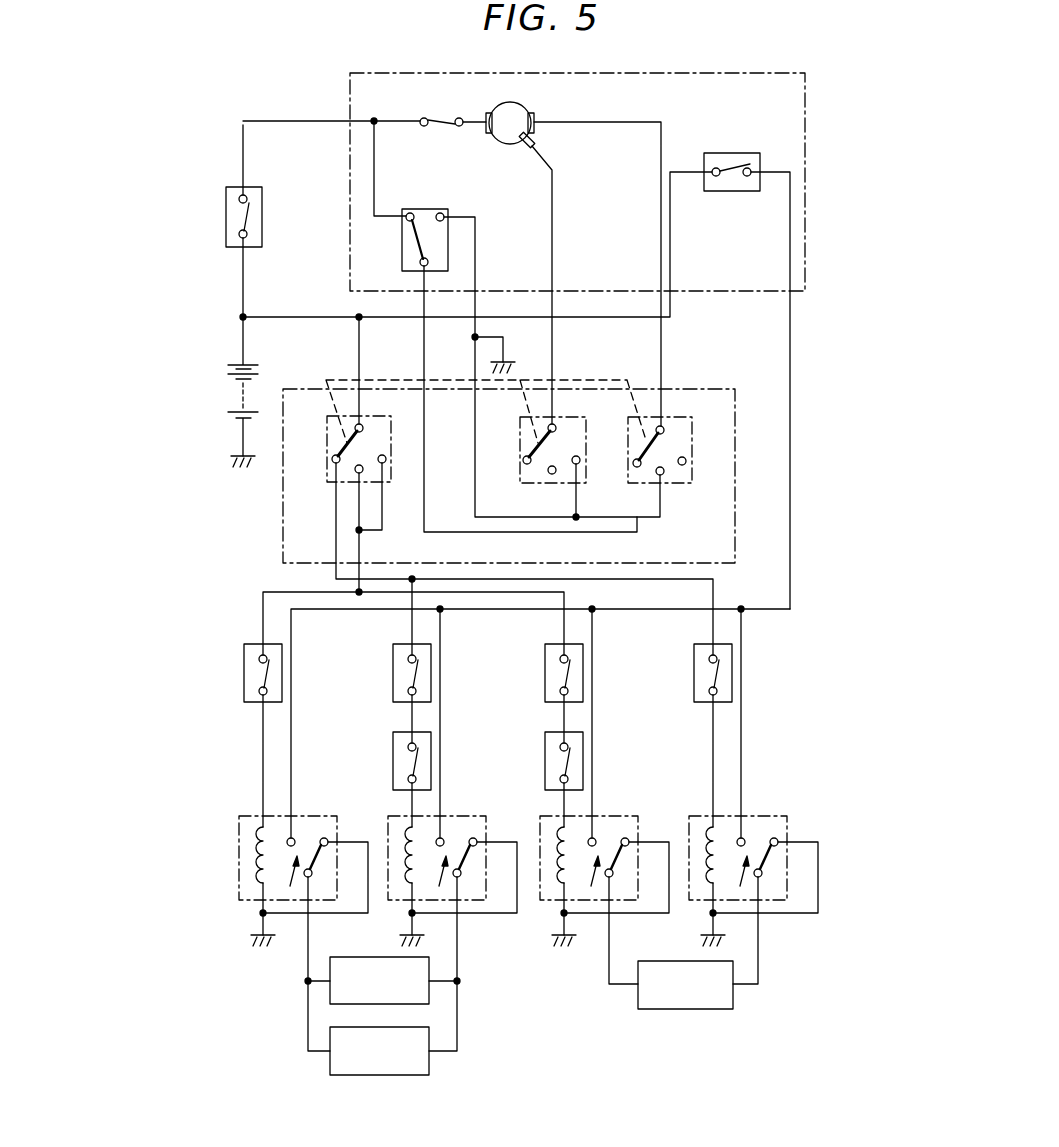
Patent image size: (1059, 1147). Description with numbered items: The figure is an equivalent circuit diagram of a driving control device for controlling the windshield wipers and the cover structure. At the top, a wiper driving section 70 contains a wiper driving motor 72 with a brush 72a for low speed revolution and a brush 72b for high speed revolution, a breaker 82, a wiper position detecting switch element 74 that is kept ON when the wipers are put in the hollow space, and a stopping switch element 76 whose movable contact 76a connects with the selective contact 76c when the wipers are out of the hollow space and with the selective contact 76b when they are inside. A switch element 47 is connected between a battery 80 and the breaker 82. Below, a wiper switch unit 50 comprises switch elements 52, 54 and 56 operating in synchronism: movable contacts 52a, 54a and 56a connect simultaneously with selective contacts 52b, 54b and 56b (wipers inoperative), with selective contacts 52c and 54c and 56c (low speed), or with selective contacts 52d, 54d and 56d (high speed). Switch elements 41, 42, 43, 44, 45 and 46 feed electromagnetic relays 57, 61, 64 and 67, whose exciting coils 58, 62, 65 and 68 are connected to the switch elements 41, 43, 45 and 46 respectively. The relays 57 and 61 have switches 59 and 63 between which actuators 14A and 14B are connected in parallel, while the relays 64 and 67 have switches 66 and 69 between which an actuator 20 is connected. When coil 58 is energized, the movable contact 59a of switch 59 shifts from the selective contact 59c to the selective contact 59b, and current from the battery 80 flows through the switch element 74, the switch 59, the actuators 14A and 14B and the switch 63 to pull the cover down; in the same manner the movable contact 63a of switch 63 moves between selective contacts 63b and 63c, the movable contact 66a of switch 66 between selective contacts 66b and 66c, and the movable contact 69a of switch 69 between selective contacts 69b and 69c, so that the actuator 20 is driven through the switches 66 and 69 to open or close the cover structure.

The breaker 82 is at (436, 118).
The wiper driving motor 72 is at (530, 108).
The brush for low speed revolution 72a is at (537, 130).
The brush for high speed revolution 72b is at (522, 150).
The wiper position detecting switch element 74 is at (745, 193).
The wiper driving section 70 is at (745, 293).
The switch element 47 is at (263, 235).
The battery 80 is at (258, 368).
The stopping switch element 76 is at (402, 245).
The movable contact 76a is at (420, 262).
The selective contact 76b is at (410, 212).
The selective contact 76c is at (440, 212).
The switch element 52 is at (327, 441).
The movable contact 52a is at (363, 425).
The selective contact 52b is at (332, 460).
The selective contact 52c is at (355, 472).
The selective contact 52d is at (386, 462).
The switch element 54 is at (520, 440).
The movable contact 54a is at (556, 425).
The selective contact 54b is at (523, 462).
The selective contact 54c is at (550, 474).
The selective contact 54d is at (580, 464).
The switch element 56 is at (693, 460).
The movable contact 56a is at (664, 426).
The selective contact 56b is at (637, 467).
The selective contact 56c is at (660, 475).
The selective contact 56d is at (684, 465).
The wiper switch unit 50 is at (735, 527).
The switch element 41 is at (244, 690).
The switch element 42 is at (393, 692).
The switch element 43 is at (393, 745).
The switch element 44 is at (545, 692).
The switch element 45 is at (545, 745).
The switch element 46 is at (694, 692).
The electromagnetic relay 57 is at (243, 816).
The exciting coil 58 is at (262, 835).
The switch 59 is at (290, 888).
The movable contact 59a is at (312, 878).
The selective contact 59b is at (292, 838).
The selective contact 59c is at (324, 838).
The electromagnetic relay 61 is at (392, 816).
The exciting coil 62 is at (411, 835).
The switch 63 is at (440, 888).
The movable contact 63a is at (461, 878).
The selective contact 63b is at (442, 838).
The selective contact 63c is at (474, 838).
The electromagnetic relay 64 is at (544, 816).
The exciting coil 65 is at (563, 835).
The switch 66 is at (592, 888).
The movable contact 66a is at (613, 878).
The selective contact 66b is at (593, 838).
The selective contact 66c is at (626, 838).
The electromagnetic relay 67 is at (693, 816).
The exciting coil 68 is at (712, 835).
The switch 69 is at (741, 888).
The movable contact 69a is at (762, 878).
The selective contact 69b is at (743, 838).
The selective contact 69c is at (775, 838).
The actuator 14A is at (430, 994).
The actuator 14B is at (430, 1068).
The actuator 20 is at (718, 1012).